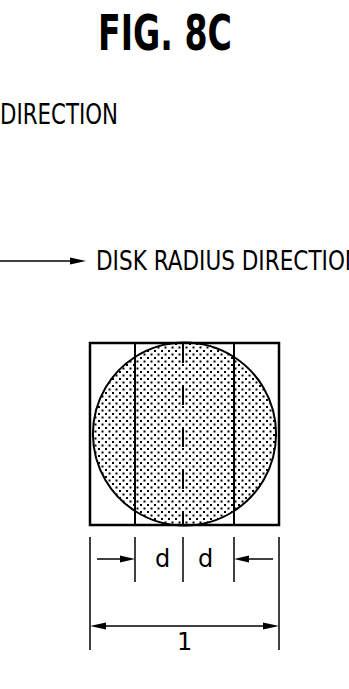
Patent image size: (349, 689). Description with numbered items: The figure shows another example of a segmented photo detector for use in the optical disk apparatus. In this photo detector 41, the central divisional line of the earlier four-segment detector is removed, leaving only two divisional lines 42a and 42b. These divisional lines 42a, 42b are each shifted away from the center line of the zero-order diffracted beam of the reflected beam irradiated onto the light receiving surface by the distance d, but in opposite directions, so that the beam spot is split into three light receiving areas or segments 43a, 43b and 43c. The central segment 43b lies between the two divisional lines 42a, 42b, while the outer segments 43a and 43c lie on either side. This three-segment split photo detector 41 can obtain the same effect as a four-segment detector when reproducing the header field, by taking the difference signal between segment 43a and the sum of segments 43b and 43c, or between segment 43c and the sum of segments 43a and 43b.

The photo detector 41 is at (78, 495).
The divisional line 42a is at (241, 380).
The divisional line 42b is at (149, 352).
The light receiving area 43a is at (250, 465).
The light receiving area 43b is at (205, 427).
The light receiving area 43c is at (108, 441).